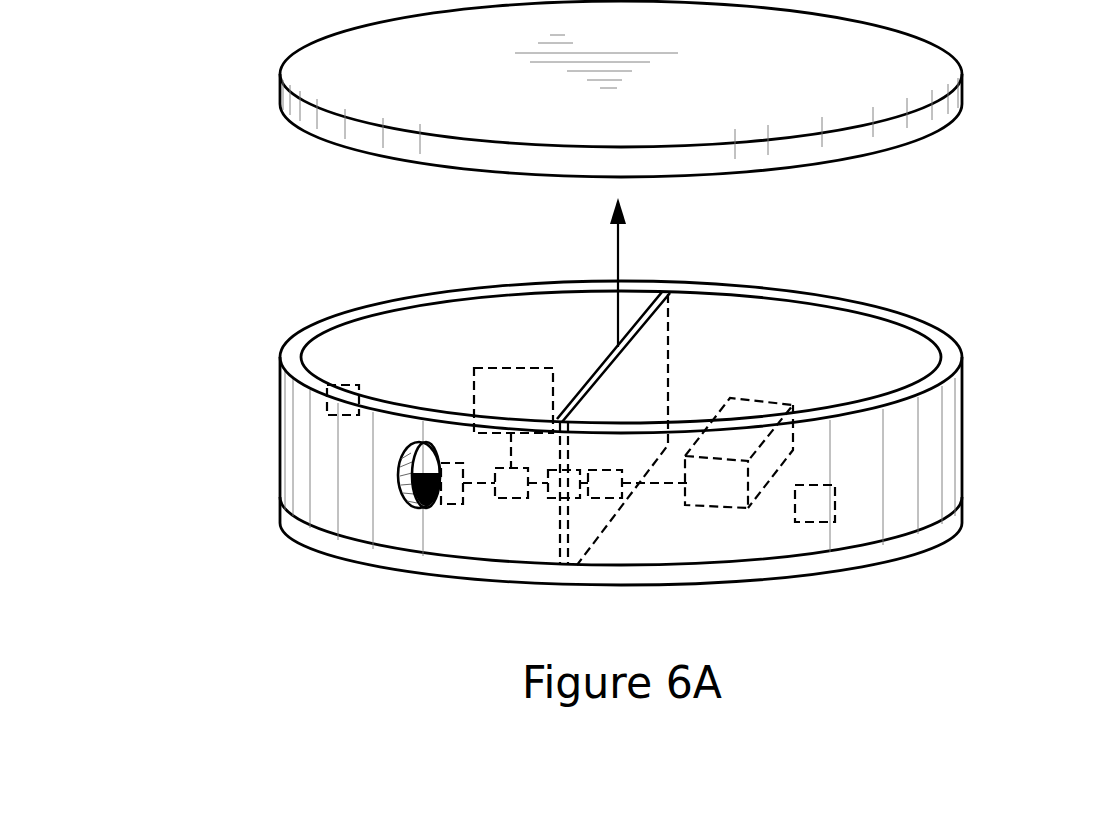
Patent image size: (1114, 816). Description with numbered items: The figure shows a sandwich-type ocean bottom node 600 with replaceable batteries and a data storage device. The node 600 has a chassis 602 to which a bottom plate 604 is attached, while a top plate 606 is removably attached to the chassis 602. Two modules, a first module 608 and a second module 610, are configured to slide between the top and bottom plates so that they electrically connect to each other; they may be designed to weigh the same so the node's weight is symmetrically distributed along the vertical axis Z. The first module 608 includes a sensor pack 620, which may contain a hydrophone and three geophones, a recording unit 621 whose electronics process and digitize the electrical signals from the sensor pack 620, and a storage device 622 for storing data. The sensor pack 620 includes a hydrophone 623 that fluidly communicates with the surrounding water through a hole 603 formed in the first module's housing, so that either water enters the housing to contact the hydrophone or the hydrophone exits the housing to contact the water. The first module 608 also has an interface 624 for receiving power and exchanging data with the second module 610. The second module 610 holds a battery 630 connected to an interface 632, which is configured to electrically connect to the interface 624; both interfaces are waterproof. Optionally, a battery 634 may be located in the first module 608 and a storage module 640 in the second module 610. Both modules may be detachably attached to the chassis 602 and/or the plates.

The sandwich-type node 600 is at (258, 241).
The chassis 602 is at (655, 332).
The hole 603 is at (404, 490).
The bottom plate 604 is at (348, 547).
The top plate 606 is at (955, 104).
The first module 608 is at (560, 308).
The second module 610 is at (782, 310).
The sensor pack 620 is at (453, 500).
The recording unit 621 is at (515, 500).
The storage device 622 is at (510, 378).
The hydrophone 623 is at (427, 504).
The interface 624 is at (555, 498).
The battery 630 is at (720, 498).
The interface 632 is at (610, 497).
The optional battery 634 is at (352, 387).
The storage module 640 is at (812, 522).